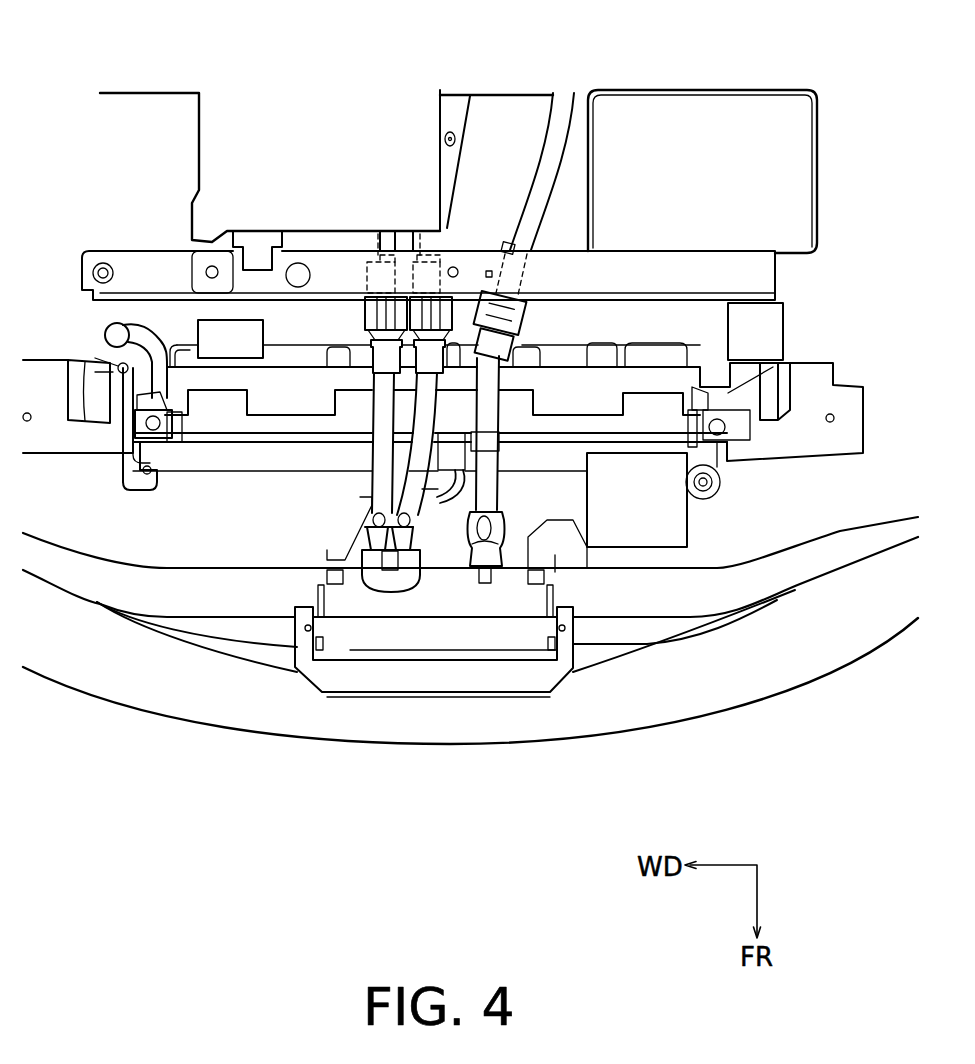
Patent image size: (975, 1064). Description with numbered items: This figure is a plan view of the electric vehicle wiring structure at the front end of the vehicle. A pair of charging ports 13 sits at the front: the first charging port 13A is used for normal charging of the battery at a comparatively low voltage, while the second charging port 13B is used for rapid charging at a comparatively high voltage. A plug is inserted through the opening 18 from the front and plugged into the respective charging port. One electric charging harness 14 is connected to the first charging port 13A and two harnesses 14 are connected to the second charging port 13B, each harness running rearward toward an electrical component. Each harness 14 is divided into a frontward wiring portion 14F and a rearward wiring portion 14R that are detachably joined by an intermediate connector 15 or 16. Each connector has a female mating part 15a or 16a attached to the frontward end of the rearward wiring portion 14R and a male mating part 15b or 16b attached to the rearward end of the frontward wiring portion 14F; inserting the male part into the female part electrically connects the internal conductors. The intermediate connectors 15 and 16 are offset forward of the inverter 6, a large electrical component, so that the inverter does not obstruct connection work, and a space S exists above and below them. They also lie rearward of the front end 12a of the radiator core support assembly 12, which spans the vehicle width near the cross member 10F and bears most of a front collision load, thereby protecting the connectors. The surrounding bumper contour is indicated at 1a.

The bumper face 1a is at (93, 704).
The inverter 6 is at (208, 125).
The cross member 10F is at (752, 278).
The radiator core support assembly 12 is at (234, 449).
The front end of radiator core support assembly 12a is at (200, 450).
The charging port 13 is at (457, 646).
The first charging port 13A is at (482, 594).
The second charging port 13B is at (388, 594).
The electric charging harness 14 is at (528, 316).
The frontward wiring portion 14F is at (372, 471).
The rearward wiring portion 14R is at (428, 232).
The intermediate connector 15 is at (561, 302).
The female mating part 15a is at (530, 314).
The male mating part 15b is at (546, 365).
The intermediate connector 16 is at (456, 314).
The female mating part 16a is at (414, 297).
The male mating part 16b is at (414, 385).
The opening 18 is at (352, 652).
The space S is at (707, 327).